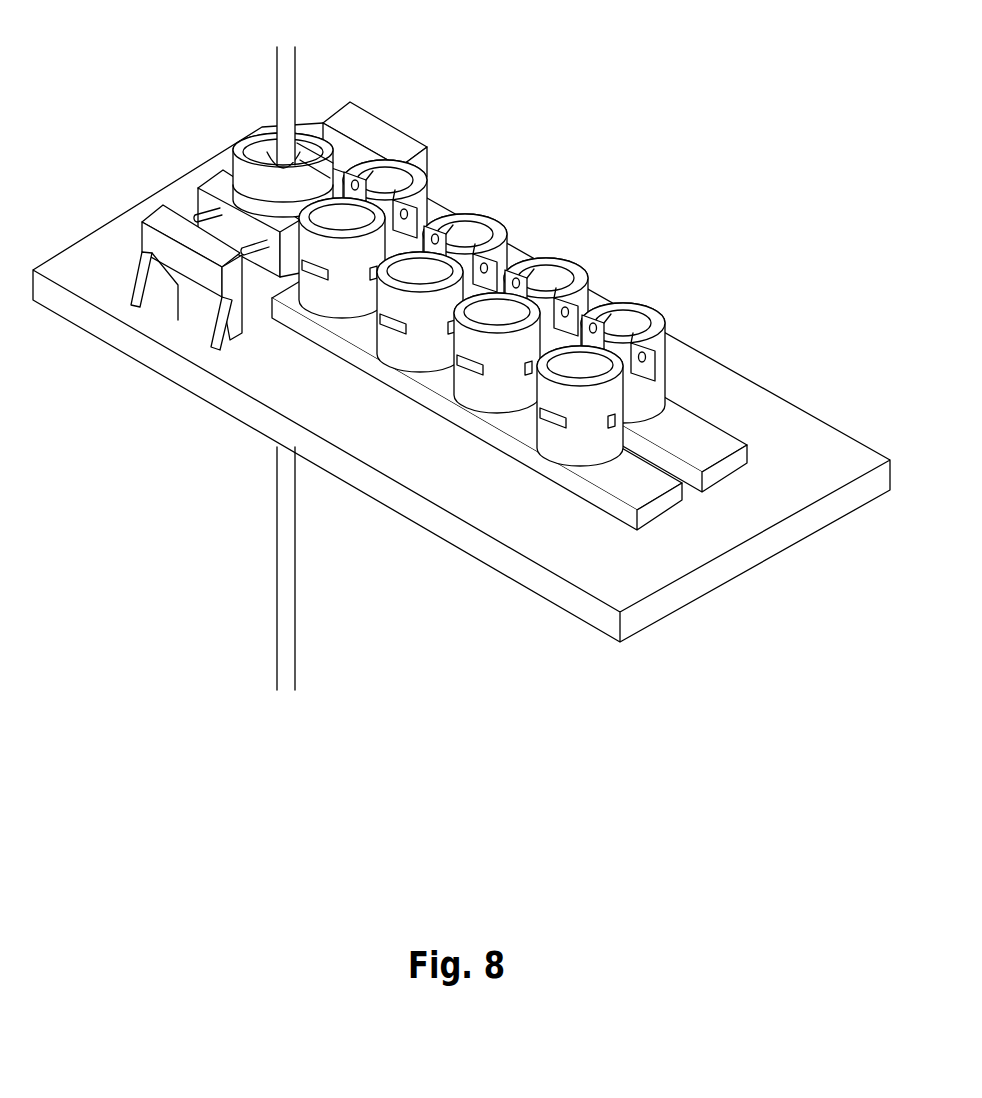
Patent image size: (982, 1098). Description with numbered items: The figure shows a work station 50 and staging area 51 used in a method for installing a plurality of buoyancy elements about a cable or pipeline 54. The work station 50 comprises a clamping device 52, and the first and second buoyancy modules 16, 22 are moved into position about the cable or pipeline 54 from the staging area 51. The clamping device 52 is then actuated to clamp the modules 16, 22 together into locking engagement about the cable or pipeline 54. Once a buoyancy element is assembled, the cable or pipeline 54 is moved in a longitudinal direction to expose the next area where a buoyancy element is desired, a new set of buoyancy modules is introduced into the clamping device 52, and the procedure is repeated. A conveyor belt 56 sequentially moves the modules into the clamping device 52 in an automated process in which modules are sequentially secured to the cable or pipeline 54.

The first buoyancy module 16 is at (303, 148).
The second buoyancy module 22 is at (258, 167).
The work station 50 is at (190, 372).
The staging area 51 is at (345, 380).
The clamping device 52 is at (161, 253).
The cable or pipeline 54 is at (277, 65).
The conveyor belt 56 is at (710, 437).